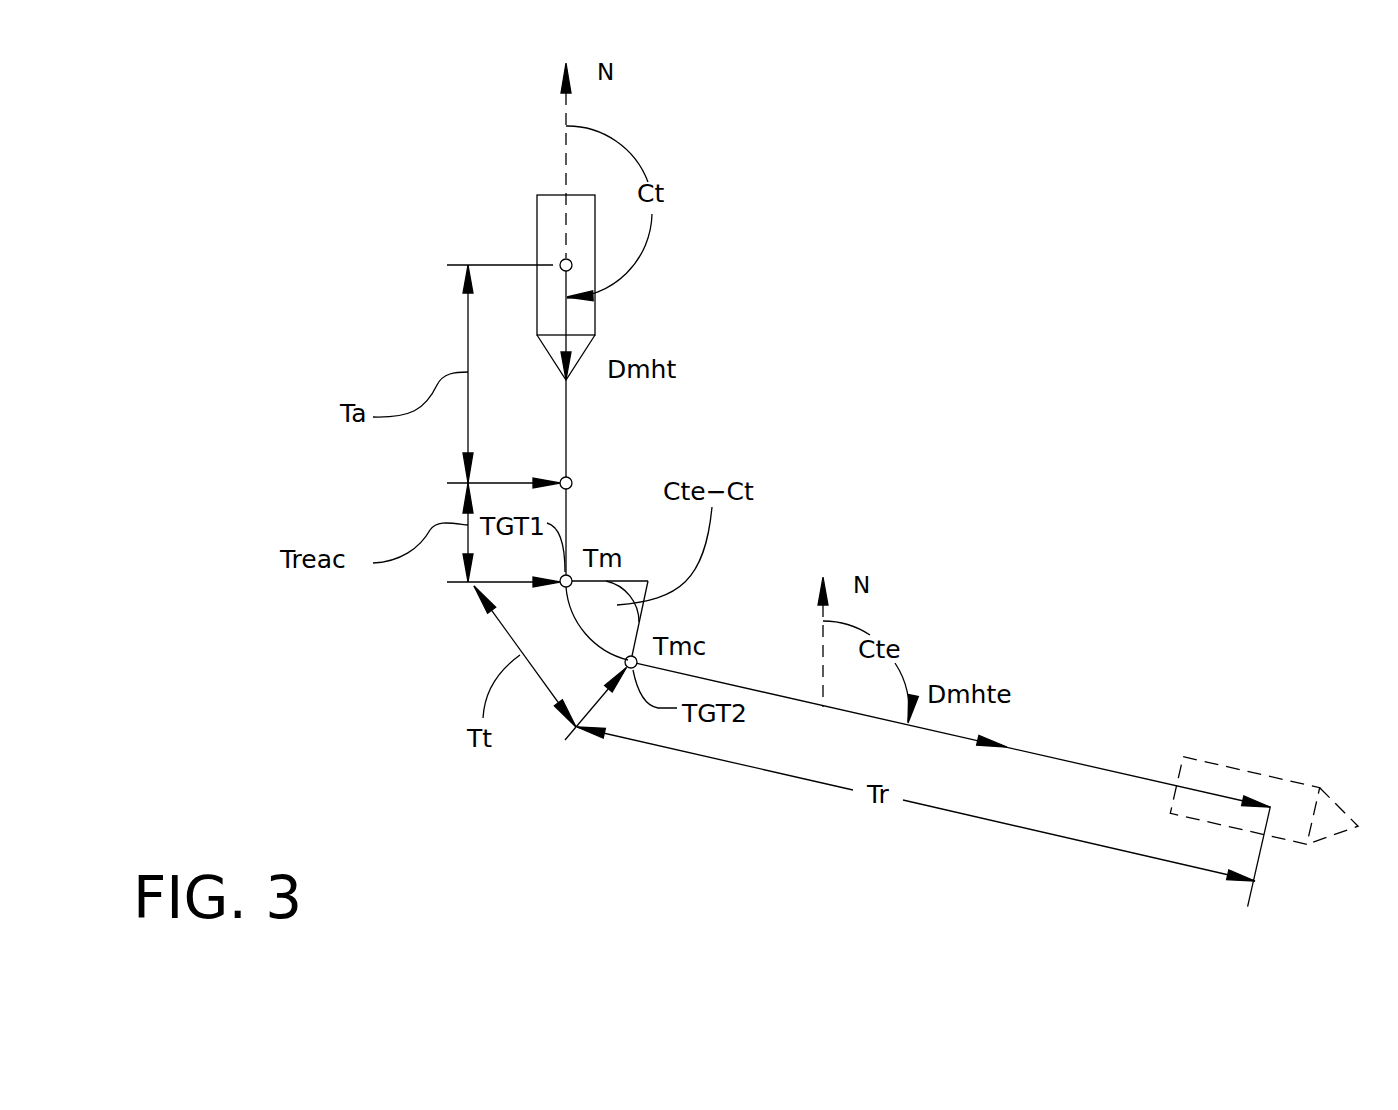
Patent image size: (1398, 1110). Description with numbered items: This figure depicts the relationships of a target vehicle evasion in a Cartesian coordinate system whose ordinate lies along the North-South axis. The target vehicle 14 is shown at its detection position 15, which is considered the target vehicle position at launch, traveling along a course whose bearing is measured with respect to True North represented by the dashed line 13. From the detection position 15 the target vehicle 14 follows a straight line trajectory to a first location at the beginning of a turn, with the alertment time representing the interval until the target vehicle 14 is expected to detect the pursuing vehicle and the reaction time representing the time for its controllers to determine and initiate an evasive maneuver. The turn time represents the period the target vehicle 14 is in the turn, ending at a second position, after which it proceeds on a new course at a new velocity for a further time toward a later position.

The dashed line 13 is at (1255, 773).
The target vehicle 14 is at (537, 223).
The target vehicle detection position 15 is at (560, 262).